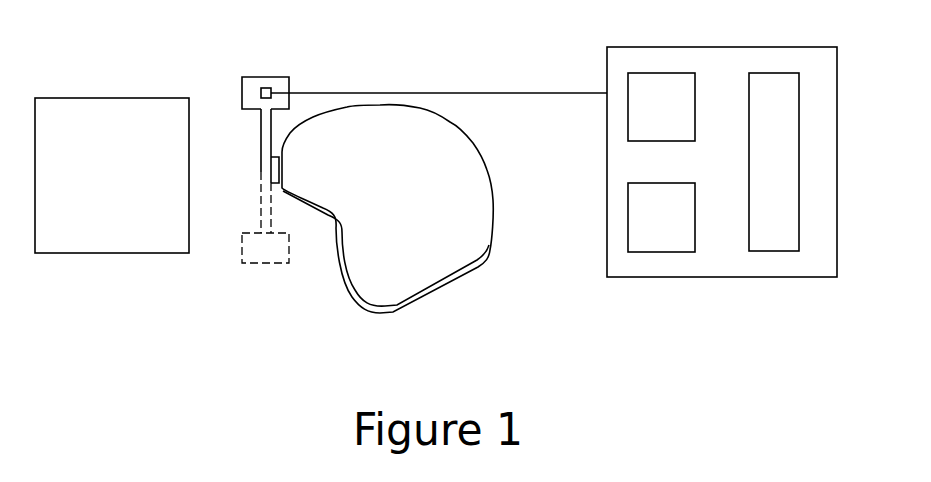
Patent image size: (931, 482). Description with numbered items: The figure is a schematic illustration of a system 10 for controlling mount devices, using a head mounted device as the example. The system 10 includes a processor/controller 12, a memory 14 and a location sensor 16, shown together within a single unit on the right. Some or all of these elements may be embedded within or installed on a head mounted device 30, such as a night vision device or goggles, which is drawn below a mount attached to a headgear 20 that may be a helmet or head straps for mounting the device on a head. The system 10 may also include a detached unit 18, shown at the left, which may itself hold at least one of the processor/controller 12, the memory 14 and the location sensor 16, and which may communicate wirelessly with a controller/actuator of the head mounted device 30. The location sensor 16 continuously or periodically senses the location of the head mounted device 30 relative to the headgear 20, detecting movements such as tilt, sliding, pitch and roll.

The system 10 is at (265, 88).
The processor/controller 12 is at (675, 120).
The memory 14 is at (675, 232).
The location sensor 16 is at (788, 178).
The detached unit 18 is at (127, 188).
The headgear 20 is at (399, 203).
The head mounted device 30 is at (266, 263).